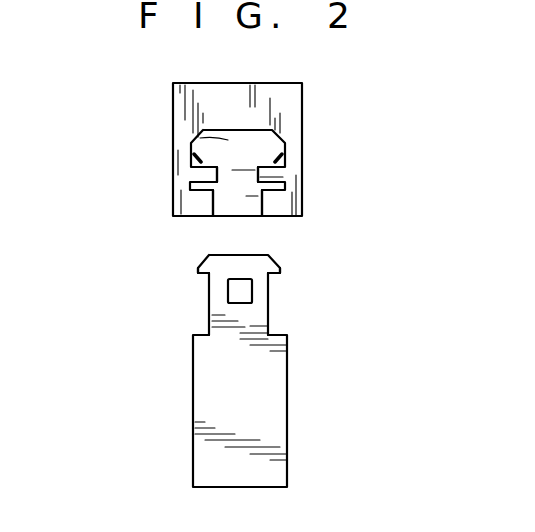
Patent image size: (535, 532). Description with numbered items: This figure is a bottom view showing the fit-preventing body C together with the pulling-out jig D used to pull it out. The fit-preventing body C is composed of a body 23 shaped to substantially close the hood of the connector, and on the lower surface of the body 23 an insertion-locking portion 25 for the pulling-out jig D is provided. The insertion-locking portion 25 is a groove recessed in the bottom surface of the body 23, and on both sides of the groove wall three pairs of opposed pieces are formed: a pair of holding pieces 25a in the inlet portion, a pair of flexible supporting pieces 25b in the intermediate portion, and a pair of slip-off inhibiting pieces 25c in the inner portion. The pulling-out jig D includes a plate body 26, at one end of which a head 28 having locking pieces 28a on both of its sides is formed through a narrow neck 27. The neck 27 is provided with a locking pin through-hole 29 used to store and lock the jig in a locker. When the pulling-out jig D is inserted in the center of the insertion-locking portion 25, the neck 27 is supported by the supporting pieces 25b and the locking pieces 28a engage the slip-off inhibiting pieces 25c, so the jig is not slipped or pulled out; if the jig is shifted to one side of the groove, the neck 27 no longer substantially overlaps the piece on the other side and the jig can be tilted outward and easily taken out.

The fit-preventing body C is at (158, 100).
The body 23 is at (305, 96).
The insertion-locking portion 25 is at (262, 179).
The holding pieces 25a is at (275, 205).
The supporting pieces 25b is at (262, 177).
The slip-off inhibiting pieces 25c is at (283, 152).
The pulling-out jig D is at (178, 422).
The head 28 is at (207, 262).
The locking pieces 28a is at (228, 288).
The locking pin through-hole 29 is at (243, 293).
The neck 27 is at (255, 318).
The plate body 26 is at (273, 433).